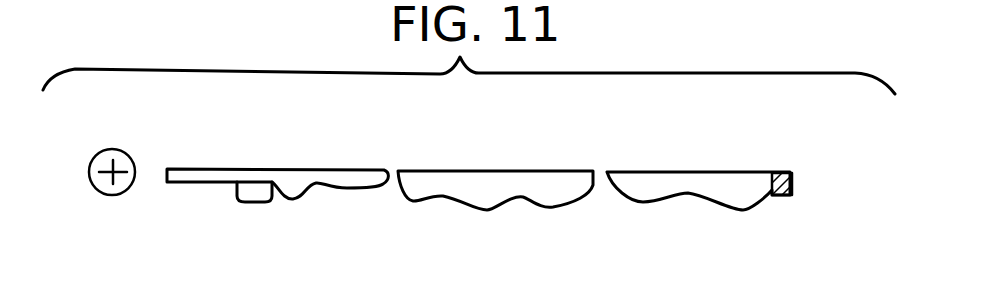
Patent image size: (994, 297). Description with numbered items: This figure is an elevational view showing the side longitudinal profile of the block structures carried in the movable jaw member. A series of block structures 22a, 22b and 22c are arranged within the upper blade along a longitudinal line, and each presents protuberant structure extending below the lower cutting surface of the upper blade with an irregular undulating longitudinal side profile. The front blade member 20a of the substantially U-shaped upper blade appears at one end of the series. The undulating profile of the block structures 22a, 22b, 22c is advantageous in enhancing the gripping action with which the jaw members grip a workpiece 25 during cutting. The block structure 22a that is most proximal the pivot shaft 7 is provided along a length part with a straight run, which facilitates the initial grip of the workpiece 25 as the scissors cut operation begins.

The pivot shaft 7 is at (110, 196).
The block structure 22a is at (297, 170).
The block structure 22b is at (482, 185).
The block structure 22c is at (672, 183).
The workpiece 25 is at (252, 201).
The front blade member 20a is at (793, 192).